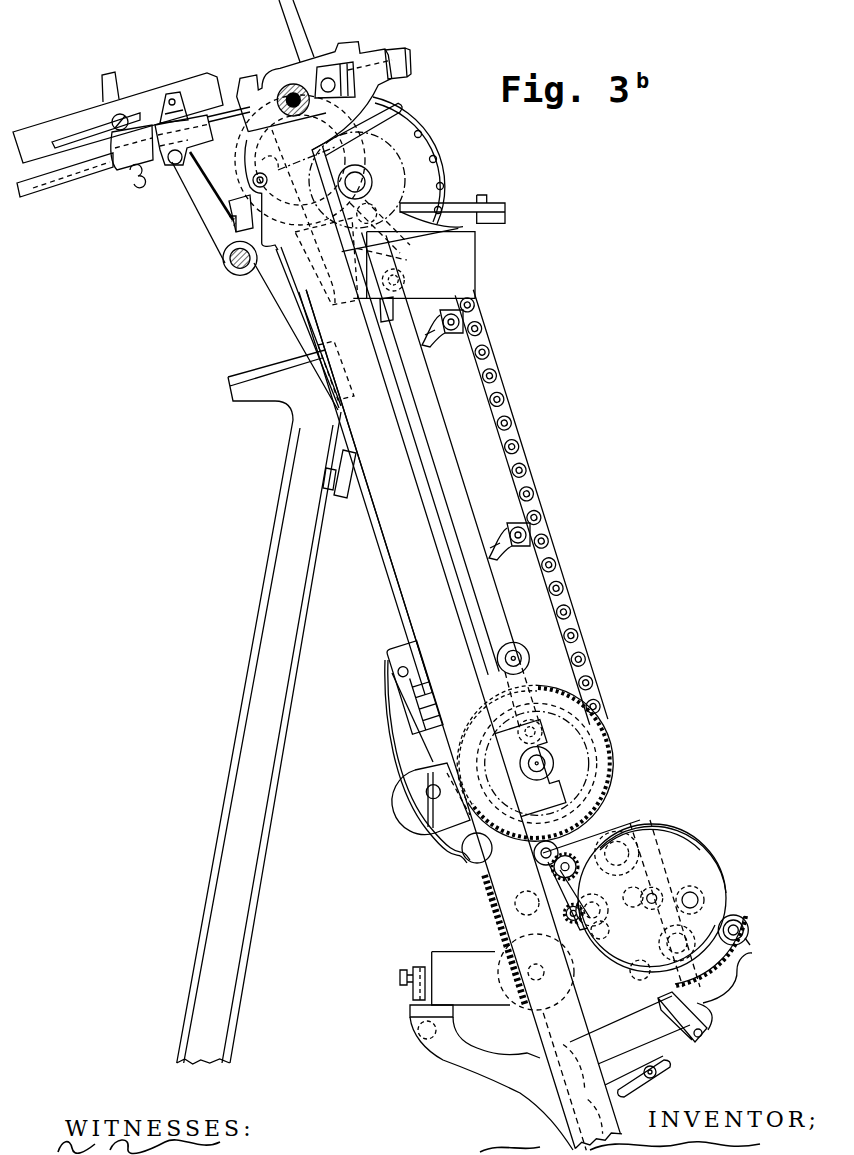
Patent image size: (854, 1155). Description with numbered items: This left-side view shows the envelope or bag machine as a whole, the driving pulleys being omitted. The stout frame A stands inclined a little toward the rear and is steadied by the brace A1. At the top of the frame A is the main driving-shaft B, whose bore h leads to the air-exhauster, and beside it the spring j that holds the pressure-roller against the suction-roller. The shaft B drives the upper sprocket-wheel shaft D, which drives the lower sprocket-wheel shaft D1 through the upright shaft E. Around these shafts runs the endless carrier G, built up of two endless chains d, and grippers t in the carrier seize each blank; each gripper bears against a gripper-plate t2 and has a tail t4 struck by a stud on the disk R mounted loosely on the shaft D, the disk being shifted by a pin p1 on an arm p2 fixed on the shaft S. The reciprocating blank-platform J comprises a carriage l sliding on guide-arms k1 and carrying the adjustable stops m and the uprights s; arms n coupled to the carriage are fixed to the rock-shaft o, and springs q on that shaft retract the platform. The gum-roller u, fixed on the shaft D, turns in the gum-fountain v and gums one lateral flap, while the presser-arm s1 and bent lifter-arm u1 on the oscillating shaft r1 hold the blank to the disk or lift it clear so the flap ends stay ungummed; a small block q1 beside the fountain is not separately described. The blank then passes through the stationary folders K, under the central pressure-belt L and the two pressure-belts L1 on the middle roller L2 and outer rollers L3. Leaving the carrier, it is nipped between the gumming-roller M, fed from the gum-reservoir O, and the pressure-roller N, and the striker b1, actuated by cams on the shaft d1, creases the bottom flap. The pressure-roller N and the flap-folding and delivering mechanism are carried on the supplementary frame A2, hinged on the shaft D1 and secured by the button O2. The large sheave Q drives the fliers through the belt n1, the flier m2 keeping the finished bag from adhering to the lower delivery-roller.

The frame A is at (445, 651).
The brace A1 is at (258, 656).
The supplementary frame A2 is at (670, 993).
The main driving-shaft B is at (314, 96).
The upper sprocket-wheel shaft D is at (358, 178).
The lower sprocket-wheel shaft D1 is at (548, 766).
The upright shaft E is at (438, 436).
The endless carrier G is at (540, 504).
The reciprocating blank-platform J is at (56, 120).
The stationary folders K is at (378, 545).
The pressure-belt L is at (392, 740).
The pressure-belts L1 is at (460, 853).
The middle roller L2 is at (412, 800).
The outer rollers L3 is at (388, 662).
The gumming-roller M is at (488, 905).
The pressure-roller N is at (553, 870).
The gum-reservoir O is at (470, 986).
The button O2 is at (647, 1076).
The sheave Q is at (647, 911).
The disk R is at (616, 761).
The shaft S is at (525, 660).
The striker b1 is at (575, 920).
The Vaucanson chains d is at (542, 502).
The shaft d1 is at (630, 845).
The bore h is at (276, 100).
The spring j is at (407, 70).
The guide-arms k1 is at (220, 132).
The carriage l is at (128, 164).
The side and back stops m is at (116, 82).
The flier m2 is at (742, 926).
The arms n is at (200, 205).
The belt n1 is at (702, 845).
The rock-shaft o is at (230, 265).
The pin p1 is at (545, 740).
The arm p2 is at (534, 675).
The spring q is at (241, 272).
The block q1 is at (395, 314).
The shaft r1 is at (252, 180).
The adjustable uprights s is at (296, 17).
The presser-arm s1 is at (262, 154).
The grippers t is at (445, 305).
The gripper-plate t2 is at (426, 320).
The tail t4 is at (490, 534).
The gum-roller u is at (428, 165).
The lifter-arm u1 is at (408, 106).
The gum-fountain v is at (462, 264).